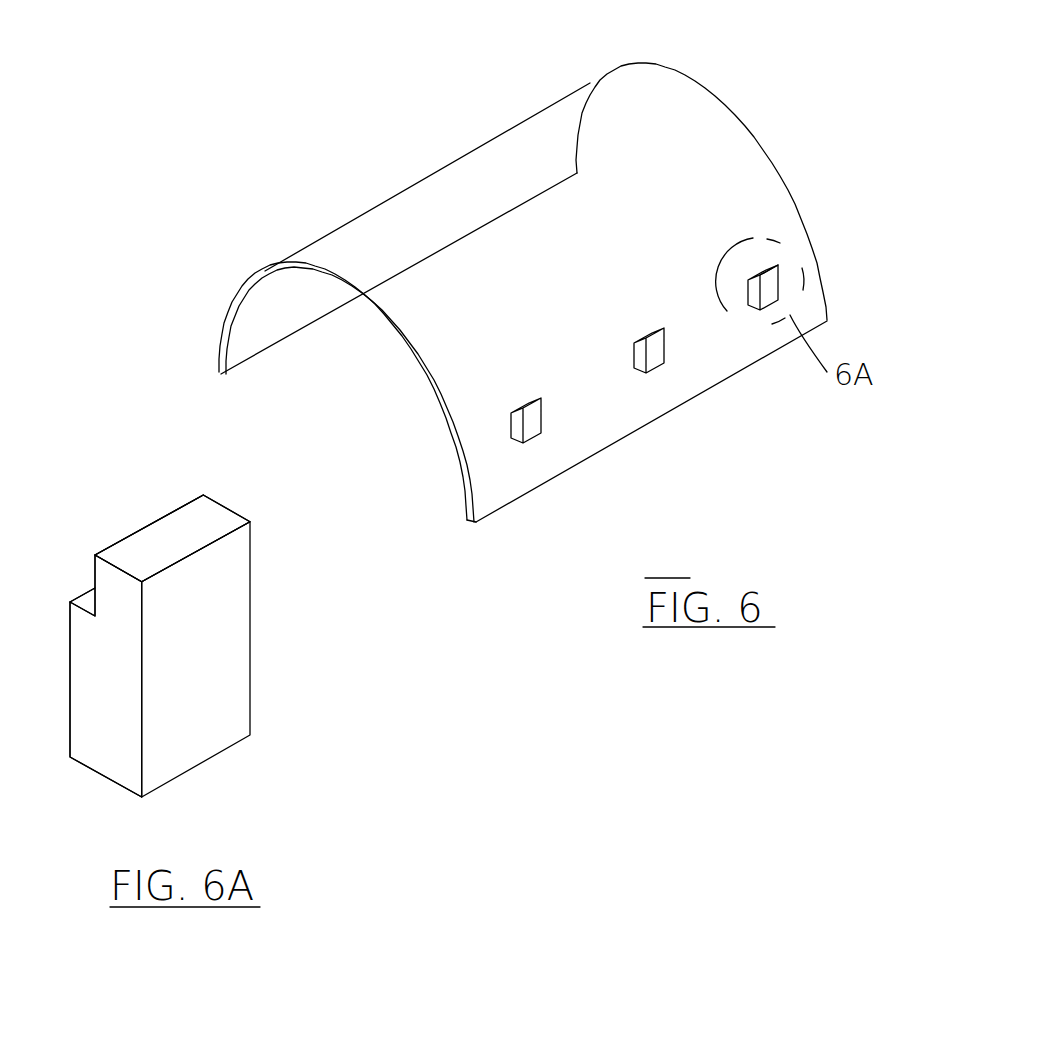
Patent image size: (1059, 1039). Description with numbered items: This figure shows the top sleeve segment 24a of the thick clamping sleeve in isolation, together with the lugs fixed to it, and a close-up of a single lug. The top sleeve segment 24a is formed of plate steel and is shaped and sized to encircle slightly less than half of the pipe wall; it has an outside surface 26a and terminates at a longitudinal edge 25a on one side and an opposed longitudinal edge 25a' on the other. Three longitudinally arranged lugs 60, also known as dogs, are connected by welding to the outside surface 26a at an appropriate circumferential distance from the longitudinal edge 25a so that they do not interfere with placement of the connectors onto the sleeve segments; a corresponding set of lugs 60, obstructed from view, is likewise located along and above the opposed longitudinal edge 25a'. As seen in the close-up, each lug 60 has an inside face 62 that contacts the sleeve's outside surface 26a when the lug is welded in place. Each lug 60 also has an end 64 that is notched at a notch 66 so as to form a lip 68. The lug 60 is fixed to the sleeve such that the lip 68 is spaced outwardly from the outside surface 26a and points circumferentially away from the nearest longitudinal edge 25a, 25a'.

In FIG. 6, the top sleeve segment 24a is at (667, 107).
In FIG. 6, the longitudinal edge 25a is at (646, 454).
In FIG. 6, the opposed longitudinal edge 25a' is at (399, 282).
In FIG. 6, the outside surface 26a is at (620, 253).
In FIG. 6, the lug 60 is at (648, 387).
In FIG. 6A, the lug 60 is at (253, 683).
In FIG. 6A, the inside face 62 is at (70, 677).
In FIG. 6A, the end 64 is at (173, 522).
In FIG. 6, the notch 66 is at (752, 278).
In FIG. 6A, the notch 66 is at (83, 585).
In FIG. 6, the lip 68 is at (777, 273).
In FIG. 6A, the lip 68 is at (118, 590).